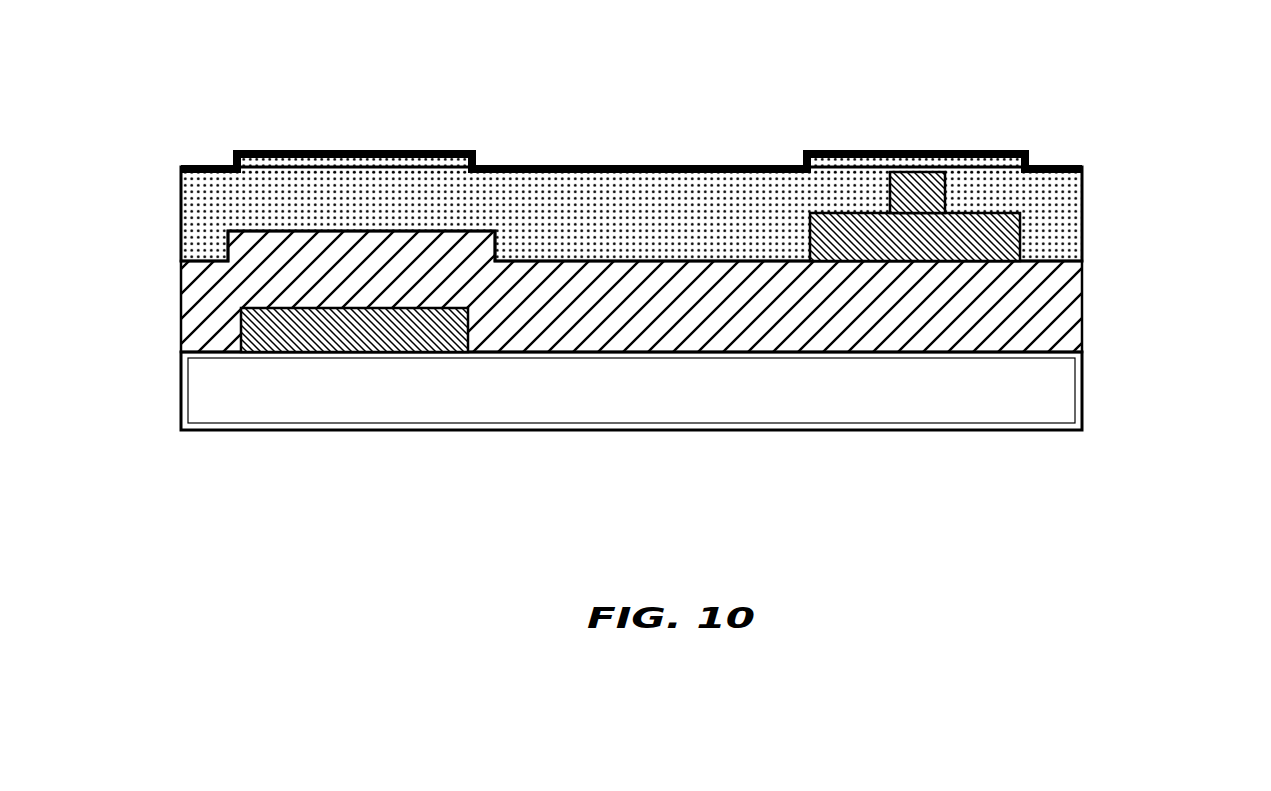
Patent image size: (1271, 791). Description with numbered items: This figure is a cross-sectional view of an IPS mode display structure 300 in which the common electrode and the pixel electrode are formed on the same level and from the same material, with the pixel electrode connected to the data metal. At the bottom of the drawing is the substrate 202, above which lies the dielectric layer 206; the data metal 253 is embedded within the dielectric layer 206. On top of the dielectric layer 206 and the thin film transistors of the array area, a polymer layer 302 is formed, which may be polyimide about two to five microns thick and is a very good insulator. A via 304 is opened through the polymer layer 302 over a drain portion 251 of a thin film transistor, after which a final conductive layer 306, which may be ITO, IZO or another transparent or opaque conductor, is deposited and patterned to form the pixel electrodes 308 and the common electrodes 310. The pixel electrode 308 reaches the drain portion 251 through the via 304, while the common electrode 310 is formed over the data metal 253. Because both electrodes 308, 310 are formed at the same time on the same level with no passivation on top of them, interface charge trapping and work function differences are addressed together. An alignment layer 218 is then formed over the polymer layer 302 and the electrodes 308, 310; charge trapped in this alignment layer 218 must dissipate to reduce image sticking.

The structure 300 is at (1073, 33).
The substrate 202 is at (1042, 391).
The dielectric layer 206 is at (1060, 309).
The data metal 253 is at (358, 338).
The drain portion 251 is at (1020, 237).
The polymer layer 302 is at (608, 202).
The via 304 is at (1083, 188).
The conductive layer 306 is at (232, 158).
The pixel electrode 308 is at (848, 150).
The common electrode 310 is at (412, 147).
The alignment layer 218 is at (1055, 163).